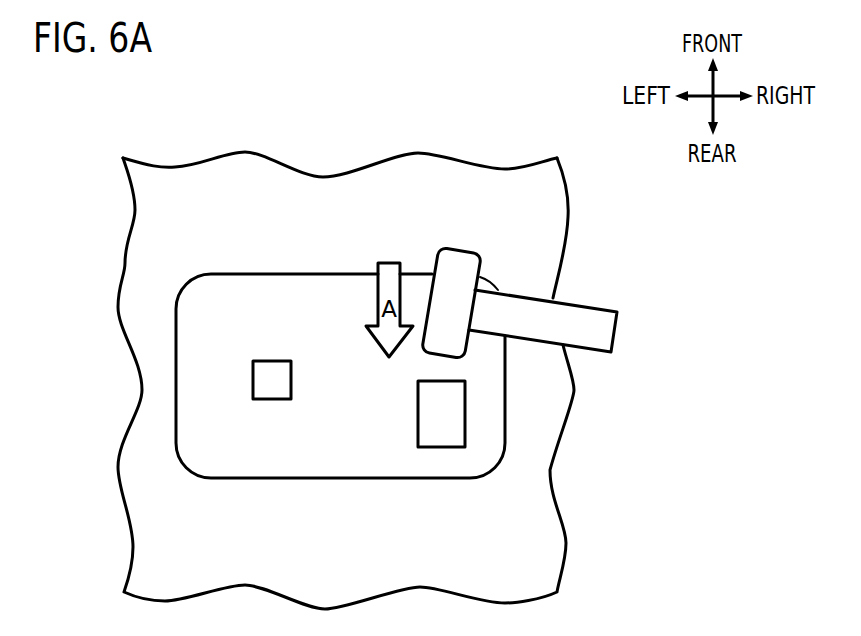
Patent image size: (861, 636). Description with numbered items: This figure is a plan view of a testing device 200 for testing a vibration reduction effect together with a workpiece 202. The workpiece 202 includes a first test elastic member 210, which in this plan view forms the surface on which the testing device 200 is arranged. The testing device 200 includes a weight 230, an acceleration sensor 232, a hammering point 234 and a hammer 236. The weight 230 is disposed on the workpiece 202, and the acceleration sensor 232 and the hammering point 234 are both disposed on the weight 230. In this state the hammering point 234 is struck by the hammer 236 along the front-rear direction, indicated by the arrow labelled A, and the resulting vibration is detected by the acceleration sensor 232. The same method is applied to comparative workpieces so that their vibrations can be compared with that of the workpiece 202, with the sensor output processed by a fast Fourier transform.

The testing device 200 is at (354, 374).
The workpiece 202 is at (121, 157).
The first test elastic member 210 is at (434, 175).
The weight 230 is at (270, 286).
The acceleration sensor 232 is at (269, 390).
The hammering point 234 is at (452, 413).
The hammer 236 is at (576, 318).